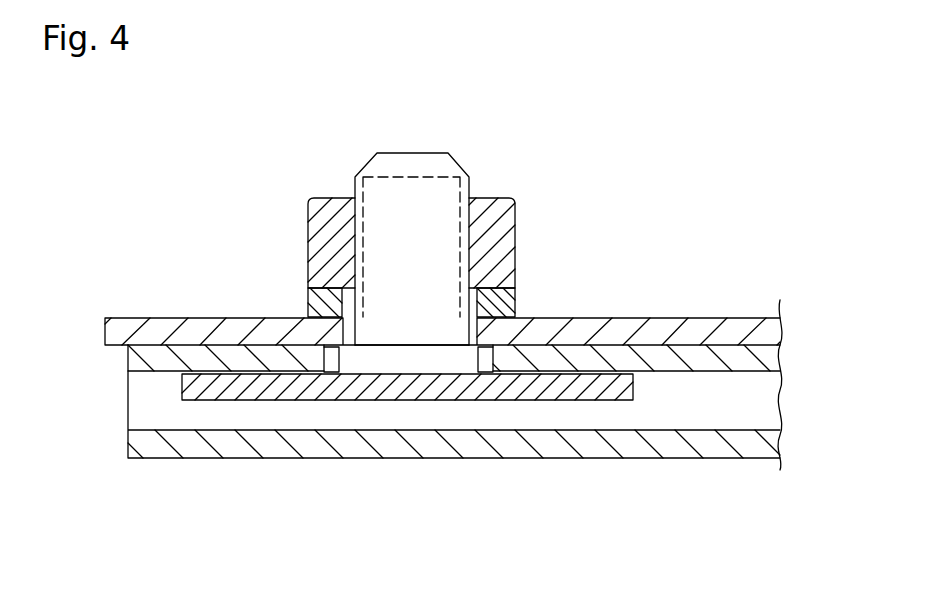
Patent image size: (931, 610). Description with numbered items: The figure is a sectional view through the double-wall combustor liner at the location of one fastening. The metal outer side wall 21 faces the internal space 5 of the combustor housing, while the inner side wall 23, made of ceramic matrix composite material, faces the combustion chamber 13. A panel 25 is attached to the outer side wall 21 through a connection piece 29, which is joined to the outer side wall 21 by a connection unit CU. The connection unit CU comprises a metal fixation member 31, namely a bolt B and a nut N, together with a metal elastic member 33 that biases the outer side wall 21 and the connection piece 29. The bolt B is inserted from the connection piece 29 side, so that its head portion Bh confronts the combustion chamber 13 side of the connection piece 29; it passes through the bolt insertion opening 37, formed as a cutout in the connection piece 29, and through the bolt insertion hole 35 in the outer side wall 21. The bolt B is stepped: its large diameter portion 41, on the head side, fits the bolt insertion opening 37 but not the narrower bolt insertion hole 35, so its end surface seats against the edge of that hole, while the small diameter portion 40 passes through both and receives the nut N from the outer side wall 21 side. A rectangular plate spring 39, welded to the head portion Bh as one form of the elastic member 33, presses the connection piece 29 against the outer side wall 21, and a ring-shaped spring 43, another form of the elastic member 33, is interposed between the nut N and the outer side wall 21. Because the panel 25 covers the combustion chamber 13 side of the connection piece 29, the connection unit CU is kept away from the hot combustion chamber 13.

The internal space 5 is at (258, 117).
The combustion chamber 13 is at (490, 568).
The outer side wall 21 is at (157, 318).
The inner side wall 23 is at (431, 467).
The panel 25 is at (143, 448).
The connection piece 29 is at (152, 358).
The fixation member 31 is at (470, 232).
The bolt B is at (457, 160).
The nut N is at (515, 213).
The elastic member 33 is at (416, 354).
The bolt insertion hole 35 is at (505, 288).
The bolt insertion opening 37 is at (332, 352).
The plate spring 39 is at (590, 386).
The small diameter portion 40 is at (430, 333).
The large diameter portion 41 is at (493, 357).
The ring-shaped spring 43 is at (308, 290).
The connection unit CU is at (363, 168).
The head portion Bh is at (352, 375).